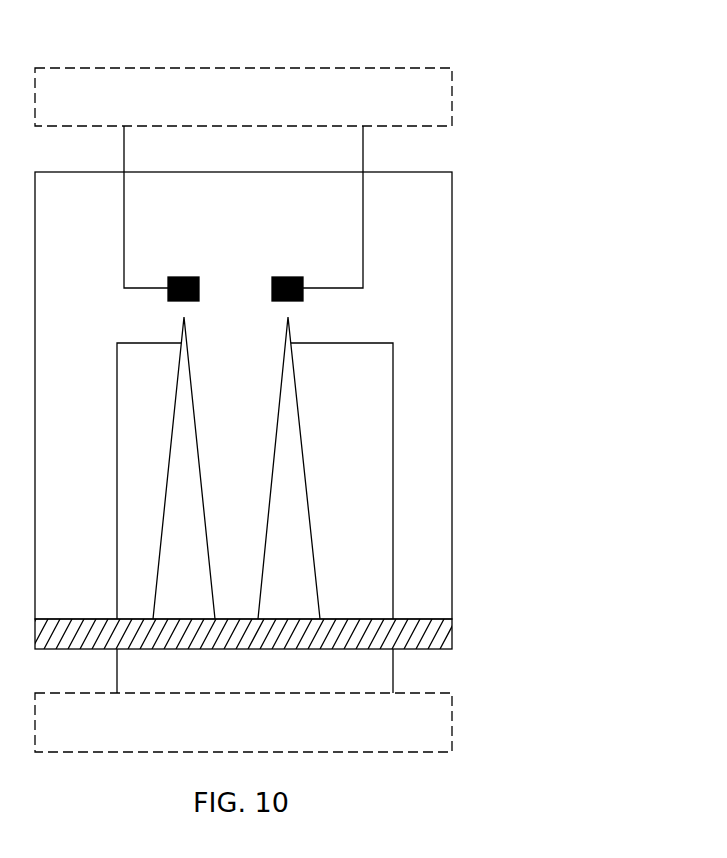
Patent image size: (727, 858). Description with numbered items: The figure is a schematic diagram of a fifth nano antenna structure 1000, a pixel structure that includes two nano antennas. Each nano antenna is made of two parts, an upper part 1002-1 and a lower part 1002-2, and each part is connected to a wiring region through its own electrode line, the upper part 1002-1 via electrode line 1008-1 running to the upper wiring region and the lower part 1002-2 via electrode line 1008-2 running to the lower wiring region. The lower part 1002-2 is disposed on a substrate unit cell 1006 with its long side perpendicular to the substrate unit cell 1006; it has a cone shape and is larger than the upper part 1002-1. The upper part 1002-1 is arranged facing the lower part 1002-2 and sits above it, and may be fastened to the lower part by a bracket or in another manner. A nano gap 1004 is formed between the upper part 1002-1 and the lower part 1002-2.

The fifth nano antenna structure 1000 is at (538, 45).
The electrode line 1008-1 is at (363, 208).
The upper part 1002-1 is at (300, 277).
The nano gap 1004 is at (316, 313).
The electrode line 1008-2 is at (395, 433).
The lower part 1002-2 is at (311, 530).
The substrate unit cell 1006 is at (452, 628).